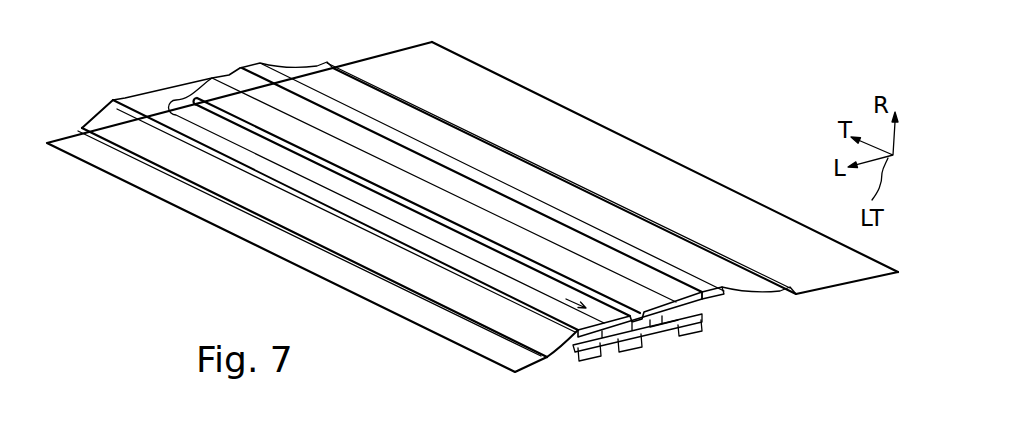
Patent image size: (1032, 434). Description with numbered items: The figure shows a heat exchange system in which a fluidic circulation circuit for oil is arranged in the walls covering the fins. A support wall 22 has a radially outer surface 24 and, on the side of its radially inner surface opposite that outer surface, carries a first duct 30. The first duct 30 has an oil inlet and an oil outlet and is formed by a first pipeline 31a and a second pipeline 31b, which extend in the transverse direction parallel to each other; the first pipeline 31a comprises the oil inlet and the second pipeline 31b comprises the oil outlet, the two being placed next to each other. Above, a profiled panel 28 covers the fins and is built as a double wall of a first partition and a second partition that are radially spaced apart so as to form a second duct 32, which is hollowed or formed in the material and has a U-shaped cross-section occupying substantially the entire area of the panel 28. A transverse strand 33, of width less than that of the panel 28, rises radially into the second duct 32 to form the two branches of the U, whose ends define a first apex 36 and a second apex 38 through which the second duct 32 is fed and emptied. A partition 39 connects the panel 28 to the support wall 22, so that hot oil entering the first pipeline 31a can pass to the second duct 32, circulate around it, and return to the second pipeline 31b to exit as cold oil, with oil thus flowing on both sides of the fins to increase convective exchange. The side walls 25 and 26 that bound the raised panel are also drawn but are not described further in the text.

The support wall 22 is at (617, 160).
The radially outer surface 24 is at (745, 187).
The first inclined side wall of stiffener 25 is at (73, 107).
The second curved side wall of stiffener 26 is at (303, 47).
The profiled panel 28 is at (145, 102).
The first duct 30 is at (651, 352).
The first pipeline 31a is at (680, 336).
The second pipeline 31b is at (594, 362).
The second duct 32 is at (178, 102).
The strand 33 is at (217, 99).
The first apex 36 is at (703, 314).
The second apex 38 is at (620, 352).
The partition 39 is at (672, 324).